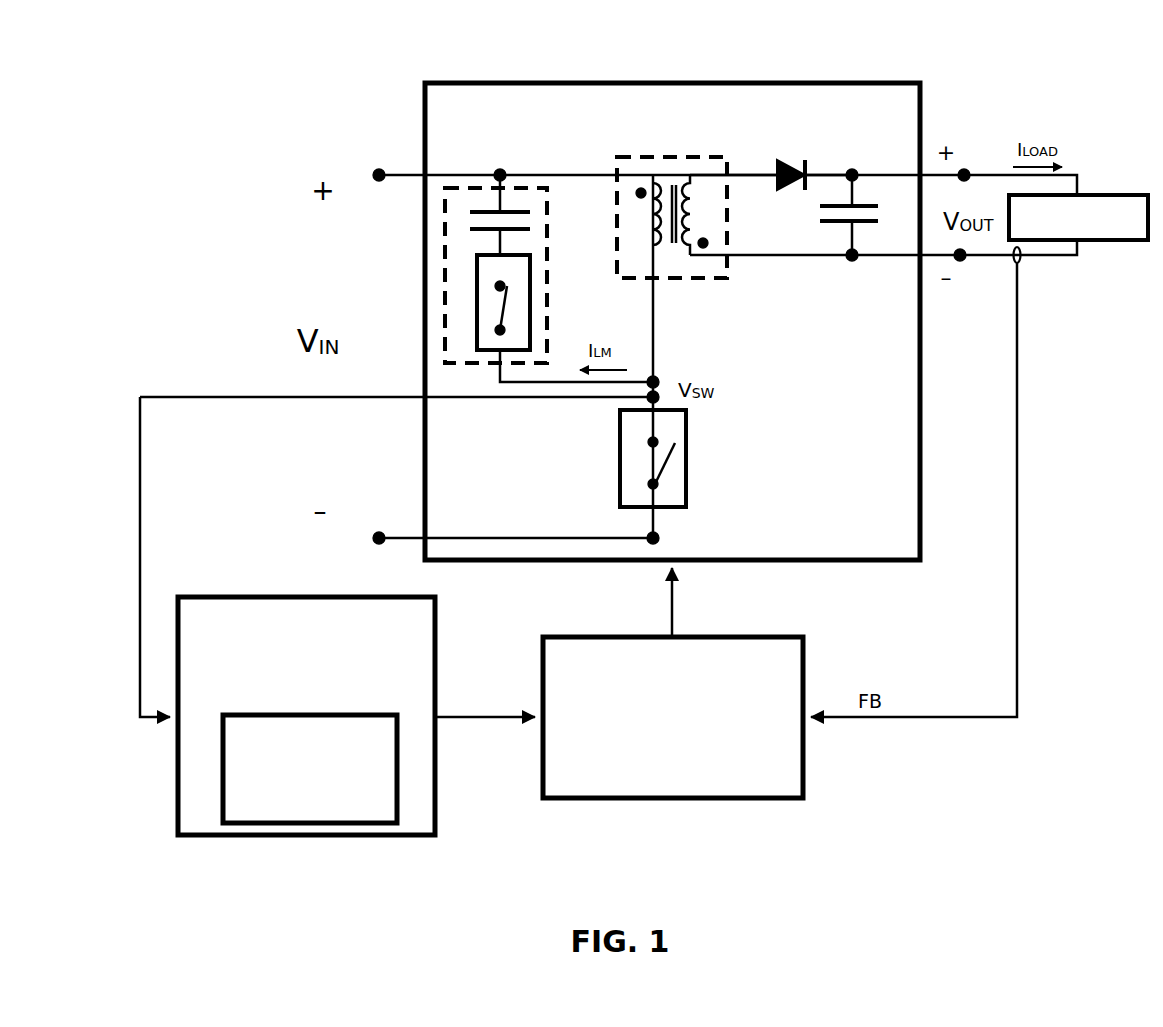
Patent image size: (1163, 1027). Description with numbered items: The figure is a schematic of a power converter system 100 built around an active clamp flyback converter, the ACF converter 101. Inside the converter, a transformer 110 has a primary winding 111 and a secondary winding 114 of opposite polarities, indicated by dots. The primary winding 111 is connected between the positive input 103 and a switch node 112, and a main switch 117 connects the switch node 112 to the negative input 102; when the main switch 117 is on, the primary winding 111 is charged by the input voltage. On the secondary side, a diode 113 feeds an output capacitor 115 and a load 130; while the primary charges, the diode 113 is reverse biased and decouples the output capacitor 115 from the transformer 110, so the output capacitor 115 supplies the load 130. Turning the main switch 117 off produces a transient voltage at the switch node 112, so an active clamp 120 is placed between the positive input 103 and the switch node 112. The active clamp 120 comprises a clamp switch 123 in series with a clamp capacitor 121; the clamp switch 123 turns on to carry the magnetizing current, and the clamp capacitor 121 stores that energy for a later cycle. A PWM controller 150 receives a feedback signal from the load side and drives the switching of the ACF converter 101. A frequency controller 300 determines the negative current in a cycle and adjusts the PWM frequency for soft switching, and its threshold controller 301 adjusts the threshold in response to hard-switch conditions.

The power converter system 100 is at (226, 80).
The ACF converter 101 is at (423, 90).
The negative input 102 is at (384, 536).
The positive input 103 is at (383, 172).
The transformer 110 is at (615, 172).
The primary winding 111 is at (648, 215).
The switch node 112 is at (660, 381).
The diode 113 is at (793, 190).
The secondary winding 114 is at (706, 215).
The output capacitor 115 is at (845, 222).
The main switch 117 is at (618, 478).
The active clamp 120 is at (548, 232).
The clamp capacitor 121 is at (462, 231).
The clamp switch 123 is at (470, 288).
The load 130 is at (1133, 243).
The PWM controller 150 is at (541, 687).
The frequency controller 300 is at (305, 596).
The threshold controller 301 is at (222, 767).